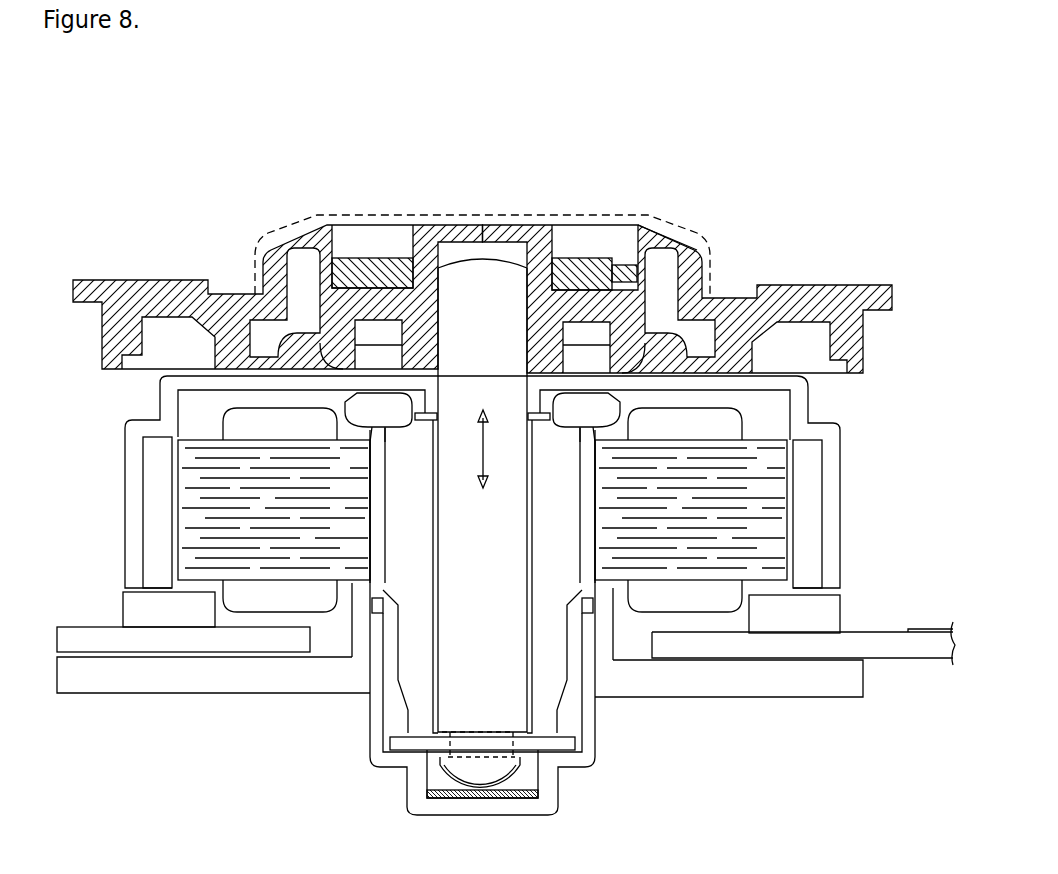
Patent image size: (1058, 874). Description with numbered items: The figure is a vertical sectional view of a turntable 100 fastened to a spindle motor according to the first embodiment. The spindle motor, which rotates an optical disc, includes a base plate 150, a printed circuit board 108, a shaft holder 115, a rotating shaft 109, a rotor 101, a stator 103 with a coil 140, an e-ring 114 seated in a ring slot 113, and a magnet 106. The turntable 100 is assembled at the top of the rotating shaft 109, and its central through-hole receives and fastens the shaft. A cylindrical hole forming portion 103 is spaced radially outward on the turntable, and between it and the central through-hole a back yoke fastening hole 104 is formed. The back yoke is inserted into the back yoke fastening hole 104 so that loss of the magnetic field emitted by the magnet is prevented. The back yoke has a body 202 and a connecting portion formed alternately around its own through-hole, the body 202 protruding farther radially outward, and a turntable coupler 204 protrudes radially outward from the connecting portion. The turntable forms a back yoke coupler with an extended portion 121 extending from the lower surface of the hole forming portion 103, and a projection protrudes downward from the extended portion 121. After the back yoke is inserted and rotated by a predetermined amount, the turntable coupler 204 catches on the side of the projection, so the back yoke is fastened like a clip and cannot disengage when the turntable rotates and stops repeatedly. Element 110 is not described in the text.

The turntable 100 is at (168, 169).
The rotor 101 is at (803, 407).
The hole forming portion 103 is at (735, 434).
The back yoke fastening hole 104 is at (370, 232).
The magnet 106 is at (810, 522).
The printed circuit board 108 is at (887, 645).
The rotating shaft 109 is at (487, 268).
The bracket 110 is at (815, 290).
The ring slot 113 is at (480, 792).
The e-ring 114 is at (560, 752).
The shaft holder 115 is at (595, 730).
The extended portion 121 is at (657, 232).
The coil 140 is at (188, 497).
The base plate 150 is at (725, 697).
The body 202 is at (570, 258).
The turntable coupler 204 is at (620, 264).